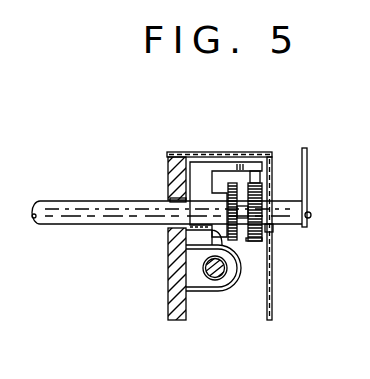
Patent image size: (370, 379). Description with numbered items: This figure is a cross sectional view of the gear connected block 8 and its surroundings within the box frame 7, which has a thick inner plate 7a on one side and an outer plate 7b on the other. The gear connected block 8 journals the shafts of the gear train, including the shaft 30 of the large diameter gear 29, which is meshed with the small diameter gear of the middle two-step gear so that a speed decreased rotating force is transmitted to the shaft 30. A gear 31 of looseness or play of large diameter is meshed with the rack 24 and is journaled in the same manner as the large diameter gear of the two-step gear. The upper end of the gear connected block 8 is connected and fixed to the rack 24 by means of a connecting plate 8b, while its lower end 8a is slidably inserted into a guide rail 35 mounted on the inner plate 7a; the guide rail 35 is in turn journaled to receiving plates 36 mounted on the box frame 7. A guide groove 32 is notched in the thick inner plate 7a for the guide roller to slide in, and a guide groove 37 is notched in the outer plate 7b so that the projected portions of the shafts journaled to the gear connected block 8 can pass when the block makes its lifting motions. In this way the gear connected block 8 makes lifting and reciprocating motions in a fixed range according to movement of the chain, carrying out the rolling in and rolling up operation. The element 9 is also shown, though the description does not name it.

The box frame 7 is at (223, 228).
The inner plate 7a is at (168, 313).
The outer plate 7b is at (272, 308).
The gear connected block 8 is at (203, 291).
The lower end 8a is at (234, 300).
The connecting plate 8b is at (222, 163).
The rod 9 is at (308, 157).
The rack 24 is at (257, 173).
The large diameter gear 29 is at (233, 182).
The shaft 30 is at (66, 208).
The gear of play 31 is at (257, 241).
The guide groove 32 is at (172, 199).
The guide rail 35 is at (207, 270).
The receiving plate 36 is at (233, 273).
The guide groove 37 is at (272, 230).